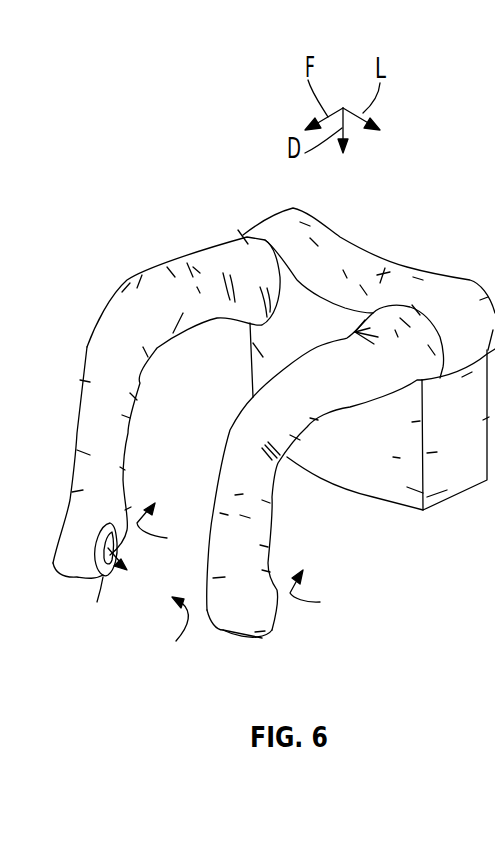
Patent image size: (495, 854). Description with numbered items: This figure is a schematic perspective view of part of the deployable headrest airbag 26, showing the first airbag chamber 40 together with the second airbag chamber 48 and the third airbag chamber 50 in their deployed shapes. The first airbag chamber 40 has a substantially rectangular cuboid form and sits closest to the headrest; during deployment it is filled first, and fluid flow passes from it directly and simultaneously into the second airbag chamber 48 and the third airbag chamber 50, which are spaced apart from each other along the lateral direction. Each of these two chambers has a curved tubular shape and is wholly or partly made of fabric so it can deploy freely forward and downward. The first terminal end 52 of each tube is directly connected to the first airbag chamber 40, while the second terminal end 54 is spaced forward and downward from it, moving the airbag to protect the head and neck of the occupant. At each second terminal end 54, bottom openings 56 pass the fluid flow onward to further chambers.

The deployable headrest airbag 26 is at (401, 209).
The first airbag chamber 40 is at (403, 277).
The third airbag chamber 50 is at (140, 277).
The first terminal end 52 is at (247, 238).
The second airbag chamber 48 is at (273, 483).
The second terminal end 54 is at (75, 582).
The bottom openings 56 is at (123, 547).